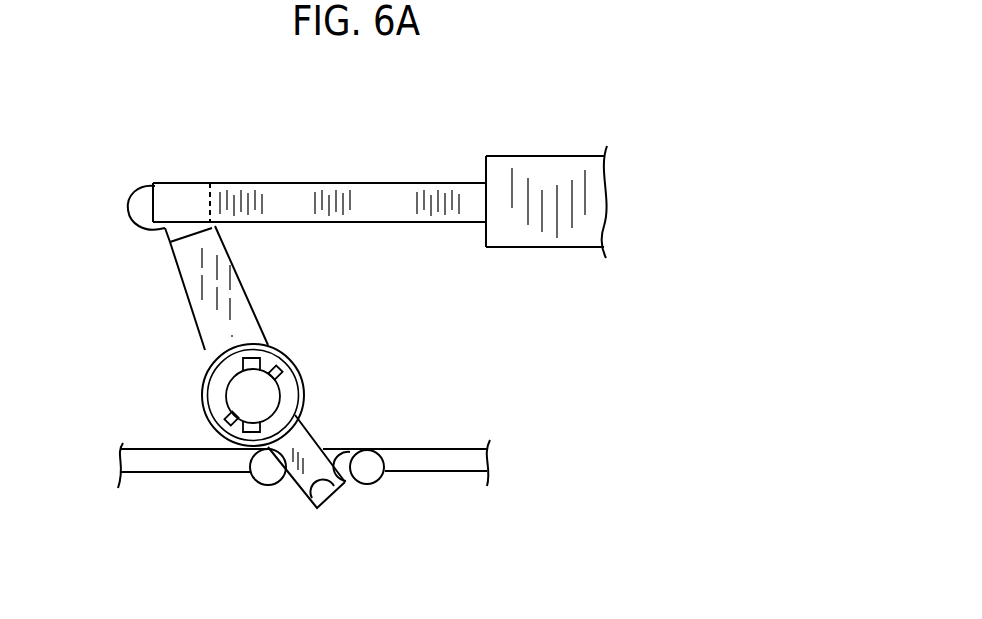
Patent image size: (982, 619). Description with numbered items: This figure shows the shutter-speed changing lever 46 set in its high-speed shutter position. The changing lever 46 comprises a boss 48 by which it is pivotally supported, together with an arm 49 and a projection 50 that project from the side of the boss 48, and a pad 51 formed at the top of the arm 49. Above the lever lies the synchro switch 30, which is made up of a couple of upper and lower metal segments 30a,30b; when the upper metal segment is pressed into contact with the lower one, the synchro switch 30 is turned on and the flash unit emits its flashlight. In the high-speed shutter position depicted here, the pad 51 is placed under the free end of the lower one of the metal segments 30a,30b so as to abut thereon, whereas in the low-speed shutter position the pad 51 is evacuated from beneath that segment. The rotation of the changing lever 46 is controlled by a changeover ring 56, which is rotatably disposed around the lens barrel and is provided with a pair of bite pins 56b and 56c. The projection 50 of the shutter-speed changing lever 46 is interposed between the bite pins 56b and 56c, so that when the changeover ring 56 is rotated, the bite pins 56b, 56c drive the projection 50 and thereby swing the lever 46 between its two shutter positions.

The synchro switch 30 is at (527, 157).
The upper metal segment and lower metal segment 30a,30b is at (290, 197).
The pad 51 is at (137, 187).
The arm 49 is at (195, 283).
The shutter-speed changing lever 46 is at (293, 350).
The boss 48 is at (215, 393).
The projection 50 is at (323, 487).
The changeover ring 56 is at (458, 478).
The bite pin 56b is at (377, 483).
The bite pin 56c is at (263, 483).